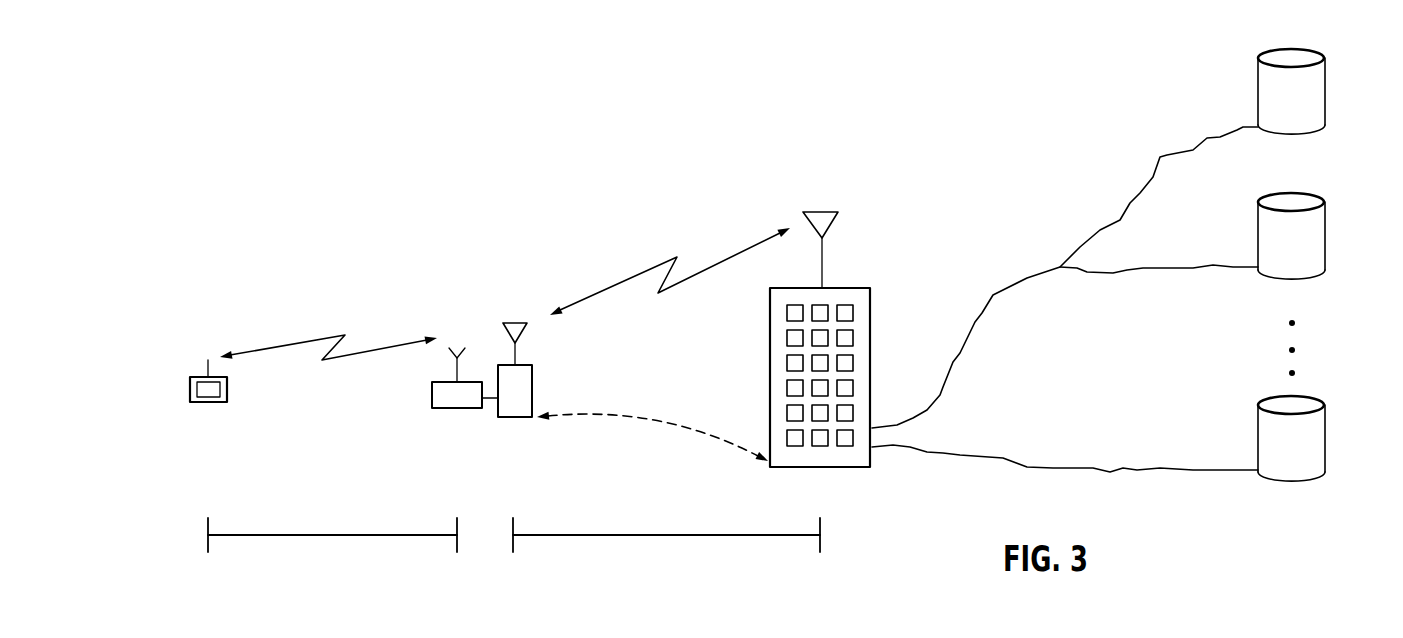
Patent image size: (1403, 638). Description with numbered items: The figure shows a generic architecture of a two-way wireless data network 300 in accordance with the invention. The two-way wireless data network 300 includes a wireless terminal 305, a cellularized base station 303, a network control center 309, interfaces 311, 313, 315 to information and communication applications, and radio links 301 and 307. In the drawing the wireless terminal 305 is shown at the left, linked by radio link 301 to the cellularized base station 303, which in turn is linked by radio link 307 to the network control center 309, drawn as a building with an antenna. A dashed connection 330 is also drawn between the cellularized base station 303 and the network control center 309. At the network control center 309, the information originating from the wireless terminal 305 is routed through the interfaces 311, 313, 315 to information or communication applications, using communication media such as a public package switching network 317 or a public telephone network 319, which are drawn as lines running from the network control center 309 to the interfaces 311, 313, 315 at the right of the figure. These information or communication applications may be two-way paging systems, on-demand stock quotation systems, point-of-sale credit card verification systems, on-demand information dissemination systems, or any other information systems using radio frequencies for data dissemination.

The two-way wireless data network 300 is at (524, 236).
The radio link 301 is at (353, 537).
The cellularized base station 303 is at (542, 432).
The wireless terminal 305 is at (197, 377).
The radio link 307 is at (715, 537).
The network control center 309 is at (857, 287).
The interface 311 is at (1322, 78).
The interface 313 is at (1322, 223).
The interface 315 is at (1322, 425).
The public package switching network 317 is at (1082, 243).
The public telephone network 319 is at (1053, 467).
The wireline connection 330 is at (717, 442).